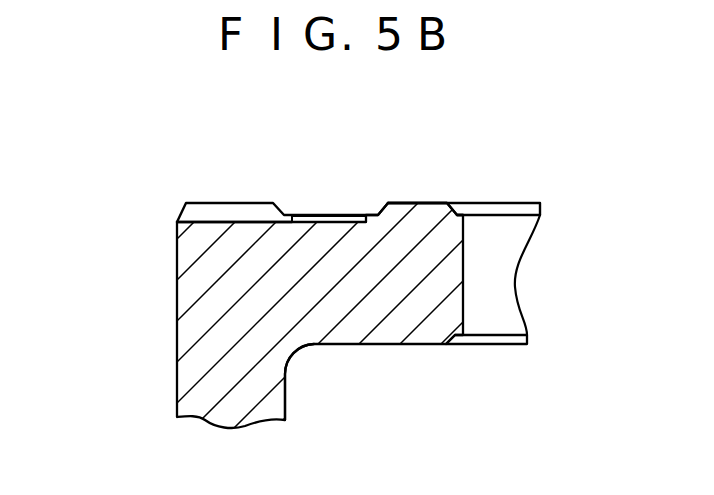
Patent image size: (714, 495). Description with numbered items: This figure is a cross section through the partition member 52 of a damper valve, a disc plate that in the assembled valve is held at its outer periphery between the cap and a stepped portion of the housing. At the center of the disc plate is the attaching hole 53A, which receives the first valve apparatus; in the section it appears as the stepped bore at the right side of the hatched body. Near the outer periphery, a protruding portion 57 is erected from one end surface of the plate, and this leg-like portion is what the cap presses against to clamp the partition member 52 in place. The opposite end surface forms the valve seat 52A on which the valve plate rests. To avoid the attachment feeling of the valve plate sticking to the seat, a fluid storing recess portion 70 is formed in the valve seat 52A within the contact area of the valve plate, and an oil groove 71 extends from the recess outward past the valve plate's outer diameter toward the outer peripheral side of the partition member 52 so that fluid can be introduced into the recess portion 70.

The partition member 52 is at (177, 340).
The valve seat 52A is at (433, 203).
The attaching hole 53A is at (463, 303).
The protruding portion 57 is at (287, 408).
The fluid storing recess portion 70 is at (343, 216).
The oil groove 71 is at (207, 203).